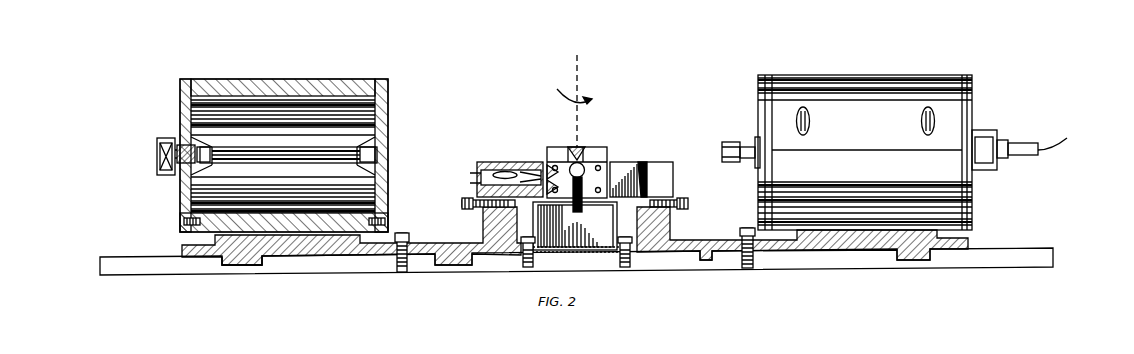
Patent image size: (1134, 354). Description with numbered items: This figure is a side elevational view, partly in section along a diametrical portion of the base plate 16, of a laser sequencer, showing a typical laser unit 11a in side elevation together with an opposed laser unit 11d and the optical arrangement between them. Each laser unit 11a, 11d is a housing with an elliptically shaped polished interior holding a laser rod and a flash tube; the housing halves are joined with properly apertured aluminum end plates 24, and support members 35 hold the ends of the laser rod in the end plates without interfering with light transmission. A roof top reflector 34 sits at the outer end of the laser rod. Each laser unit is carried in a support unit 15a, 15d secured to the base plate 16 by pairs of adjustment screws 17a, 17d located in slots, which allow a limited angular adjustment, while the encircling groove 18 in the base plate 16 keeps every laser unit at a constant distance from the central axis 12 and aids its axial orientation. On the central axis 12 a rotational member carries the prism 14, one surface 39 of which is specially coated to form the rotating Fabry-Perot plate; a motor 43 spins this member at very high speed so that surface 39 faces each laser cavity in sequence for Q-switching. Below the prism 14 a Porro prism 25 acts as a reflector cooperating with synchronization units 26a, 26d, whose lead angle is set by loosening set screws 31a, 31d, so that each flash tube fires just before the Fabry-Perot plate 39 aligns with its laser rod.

The laser unit 11a is at (278, 141).
The laser unit 11d is at (870, 75).
The central axis 12 is at (578, 62).
The prism 14 is at (559, 157).
The support unit 15a is at (182, 249).
The support unit 15d is at (968, 246).
The base plate 16 is at (498, 262).
The adjustment screws 17a is at (407, 240).
The adjustment screws 17d is at (742, 233).
The encircling groove 18 is at (262, 258).
The end plates 24 is at (180, 100).
The Porro prism 25 is at (547, 162).
The synchronization unit 26a is at (480, 162).
The synchronization unit 26d is at (653, 162).
The set screw 31a is at (462, 203).
The set screw 31d is at (688, 203).
The roof top reflector 34 is at (170, 138).
The support members 35 is at (375, 140).
The Fabry-Perot plate surface 39 is at (566, 152).
The motor 43 is at (600, 240).